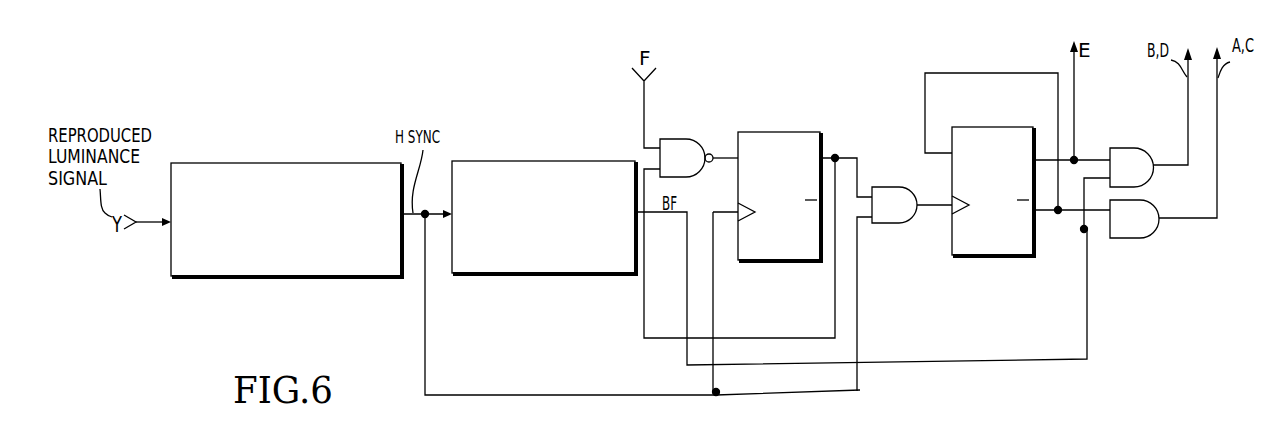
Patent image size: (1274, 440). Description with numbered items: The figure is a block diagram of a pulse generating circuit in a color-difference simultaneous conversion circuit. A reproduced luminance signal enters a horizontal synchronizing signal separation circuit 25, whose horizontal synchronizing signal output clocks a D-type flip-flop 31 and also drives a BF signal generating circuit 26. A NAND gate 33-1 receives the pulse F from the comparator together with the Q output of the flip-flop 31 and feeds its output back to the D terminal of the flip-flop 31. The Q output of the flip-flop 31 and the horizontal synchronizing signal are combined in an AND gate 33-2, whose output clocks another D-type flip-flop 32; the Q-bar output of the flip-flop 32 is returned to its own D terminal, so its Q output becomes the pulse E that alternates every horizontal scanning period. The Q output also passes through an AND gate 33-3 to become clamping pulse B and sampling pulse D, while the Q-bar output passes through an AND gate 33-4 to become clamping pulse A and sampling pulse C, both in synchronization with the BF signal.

The horizontal synchronizing signal separation circuit 25 is at (296, 163).
The BF signal generating circuit 26 is at (560, 161).
The D-type flip-flop 31 is at (776, 132).
The D-type flip-flop 32 is at (985, 258).
The NAND gate 33-1 is at (672, 139).
The AND gate 33-2 is at (888, 224).
The AND gate 33-3 is at (1122, 147).
The AND gate 33-4 is at (1143, 239).